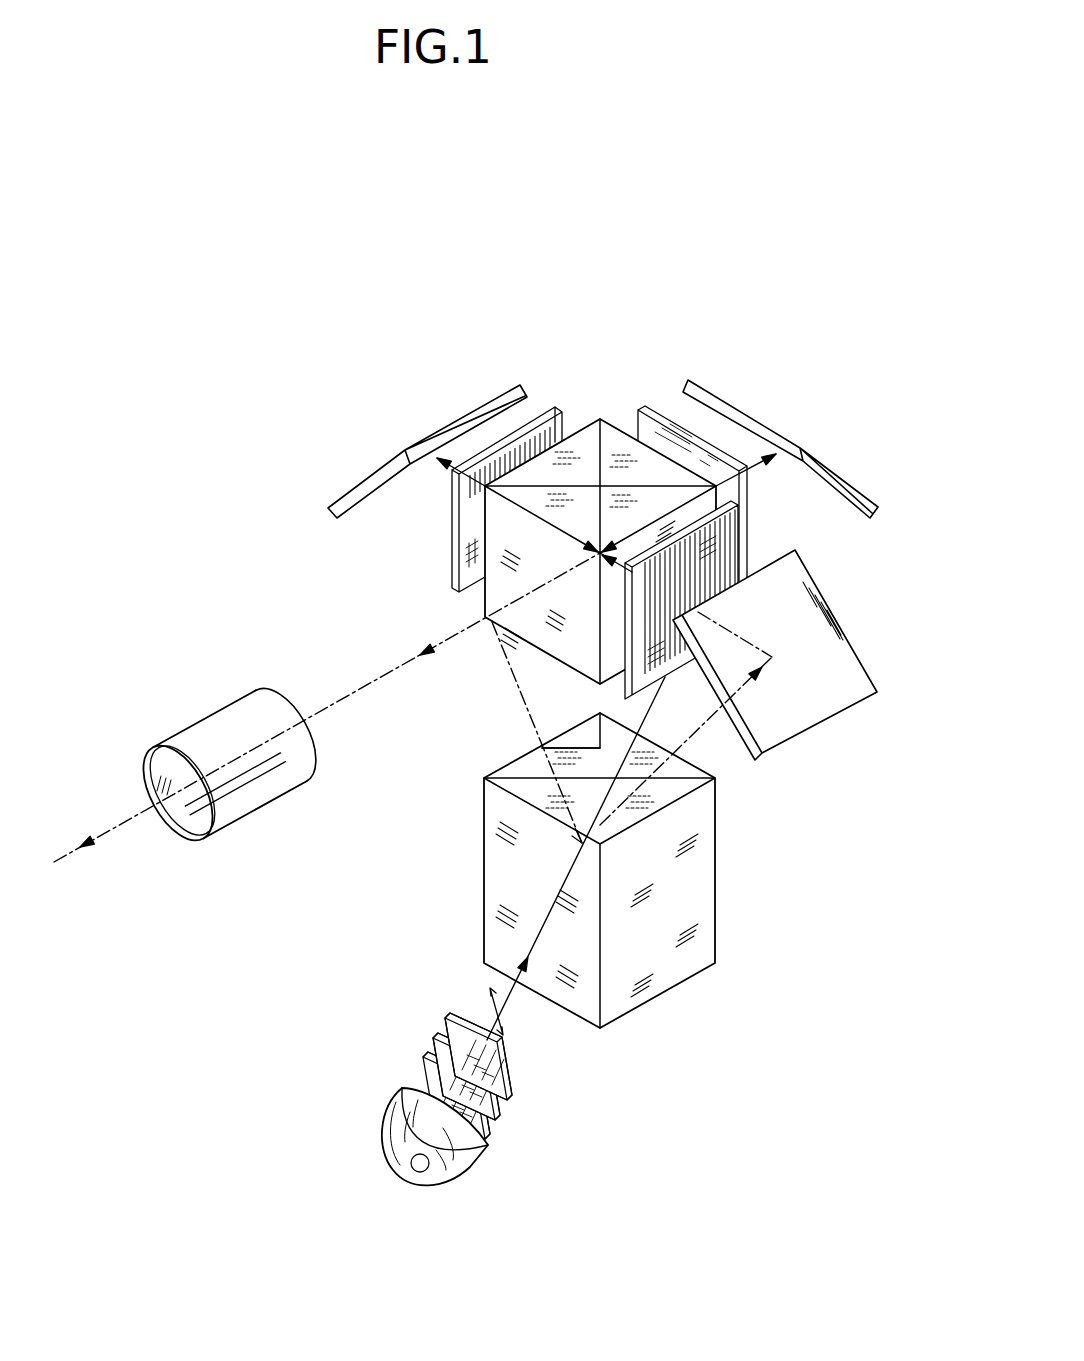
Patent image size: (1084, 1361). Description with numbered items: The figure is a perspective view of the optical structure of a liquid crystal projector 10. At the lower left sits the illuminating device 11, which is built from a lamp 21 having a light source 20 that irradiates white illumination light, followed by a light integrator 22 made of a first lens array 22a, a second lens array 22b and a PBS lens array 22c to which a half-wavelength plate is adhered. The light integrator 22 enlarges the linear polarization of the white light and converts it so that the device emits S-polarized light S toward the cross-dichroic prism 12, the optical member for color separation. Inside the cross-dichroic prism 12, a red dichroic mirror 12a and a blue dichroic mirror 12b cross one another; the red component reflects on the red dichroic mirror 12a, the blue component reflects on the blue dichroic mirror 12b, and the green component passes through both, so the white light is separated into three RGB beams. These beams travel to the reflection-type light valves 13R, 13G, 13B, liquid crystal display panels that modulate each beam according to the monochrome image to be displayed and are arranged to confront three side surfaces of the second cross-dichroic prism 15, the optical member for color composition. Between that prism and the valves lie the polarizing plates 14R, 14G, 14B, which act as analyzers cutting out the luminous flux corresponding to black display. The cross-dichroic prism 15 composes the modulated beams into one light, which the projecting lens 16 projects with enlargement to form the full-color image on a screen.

The liquid crystal projector 10 is at (348, 287).
The illuminating device 11 is at (481, 1140).
The cross-dichroic prism 12 is at (636, 894).
The red dichroic mirror 12a is at (542, 747).
The blue dichroic mirror 12b is at (670, 780).
The light valve 13R is at (364, 485).
The light valve 13G is at (757, 412).
The light valve 13B is at (805, 703).
The polarizing plate 14R is at (532, 418).
The polarizing plate 14G is at (651, 407).
The polarizing plate 14B is at (728, 580).
The cross-dichroic prism 15 is at (590, 412).
The projecting lens 16 is at (181, 820).
The light source 20 is at (413, 1180).
The lamp 21 is at (455, 1182).
The light integrator 22 is at (472, 1090).
The first lens array 22a is at (424, 1073).
The second lens array 22b is at (434, 1042).
The PBS lens array 22c is at (507, 1070).
The S-polarized light S is at (576, 858).